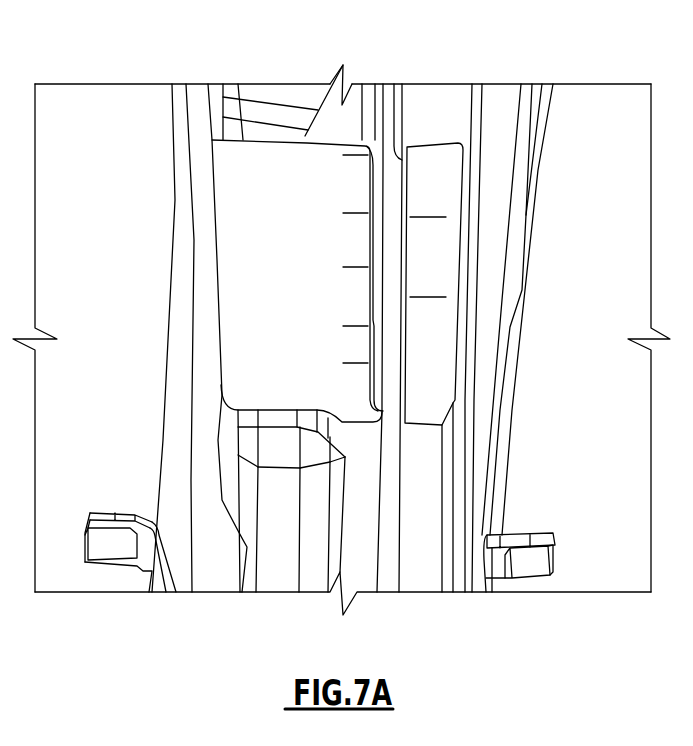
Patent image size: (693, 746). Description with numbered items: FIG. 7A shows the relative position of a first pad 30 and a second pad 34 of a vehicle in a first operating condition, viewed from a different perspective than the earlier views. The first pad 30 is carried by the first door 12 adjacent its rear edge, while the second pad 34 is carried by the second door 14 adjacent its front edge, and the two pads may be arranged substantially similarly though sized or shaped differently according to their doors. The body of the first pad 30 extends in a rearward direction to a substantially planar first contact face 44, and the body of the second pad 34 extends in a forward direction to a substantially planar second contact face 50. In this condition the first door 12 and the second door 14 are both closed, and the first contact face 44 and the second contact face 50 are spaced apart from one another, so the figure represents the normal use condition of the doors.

The first door 12 is at (272, 580).
The second door 14 is at (578, 570).
The first pad 30 is at (303, 141).
The second pad 34 is at (428, 143).
The first contact face 44 is at (382, 178).
The second contact face 50 is at (404, 181).